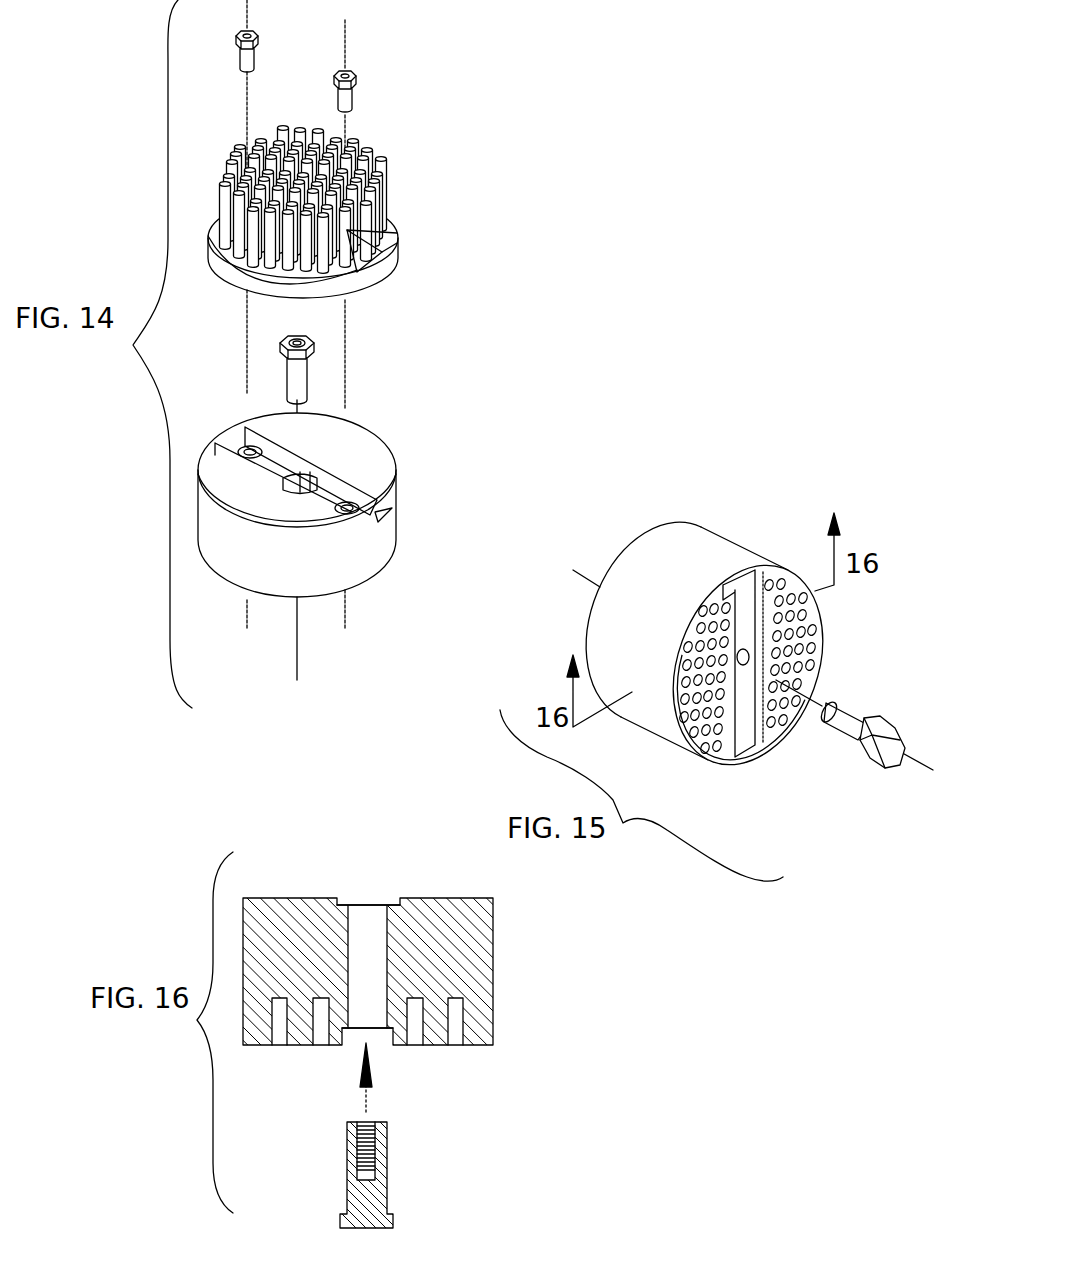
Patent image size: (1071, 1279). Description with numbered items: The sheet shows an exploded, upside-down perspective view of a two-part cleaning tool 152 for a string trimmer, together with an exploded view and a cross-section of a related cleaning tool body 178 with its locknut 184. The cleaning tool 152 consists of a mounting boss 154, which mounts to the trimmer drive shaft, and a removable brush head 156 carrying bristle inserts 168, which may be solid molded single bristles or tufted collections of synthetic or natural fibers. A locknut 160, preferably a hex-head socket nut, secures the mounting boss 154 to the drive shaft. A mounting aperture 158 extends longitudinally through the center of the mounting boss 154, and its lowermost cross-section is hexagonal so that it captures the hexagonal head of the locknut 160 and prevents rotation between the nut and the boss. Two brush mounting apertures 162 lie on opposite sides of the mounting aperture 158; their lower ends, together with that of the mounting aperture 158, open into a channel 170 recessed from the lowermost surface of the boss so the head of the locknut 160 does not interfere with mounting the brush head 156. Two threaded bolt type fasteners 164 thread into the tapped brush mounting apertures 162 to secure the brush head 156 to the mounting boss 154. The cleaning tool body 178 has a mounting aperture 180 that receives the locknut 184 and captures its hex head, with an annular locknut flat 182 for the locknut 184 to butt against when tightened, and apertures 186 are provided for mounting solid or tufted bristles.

In FIG. 14, the cleaning tool 152 is at (452, 320).
In FIG. 14, the mounting boss 154 is at (333, 496).
In FIG. 14, the brush head 156 is at (350, 212).
In FIG. 14, the mounting aperture 158 is at (320, 478).
In FIG. 14, the locknut 160 is at (307, 375).
In FIG. 14, the brush mounting apertures 162 is at (250, 445).
In FIG. 14, the threaded bolt type fasteners 164 is at (247, 55).
In FIG. 14, the bristle inserts 168 is at (390, 187).
In FIG. 14, the channel 170 is at (372, 514).
In FIG. 15, the cleaning tool body 178 is at (736, 615).
In FIG. 16, the cleaning tool body 178 is at (371, 977).
In FIG. 15, the mounting aperture 180 is at (748, 660).
In FIG. 16, the mounting aperture 180 is at (370, 920).
In FIG. 16, the locknut flat 182 is at (388, 1043).
In FIG. 15, the locknut 184 is at (833, 742).
In FIG. 16, the locknut 184 is at (375, 1190).
In FIG. 15, the apertures 186 is at (712, 757).
In FIG. 16, the apertures 186 is at (320, 1040).